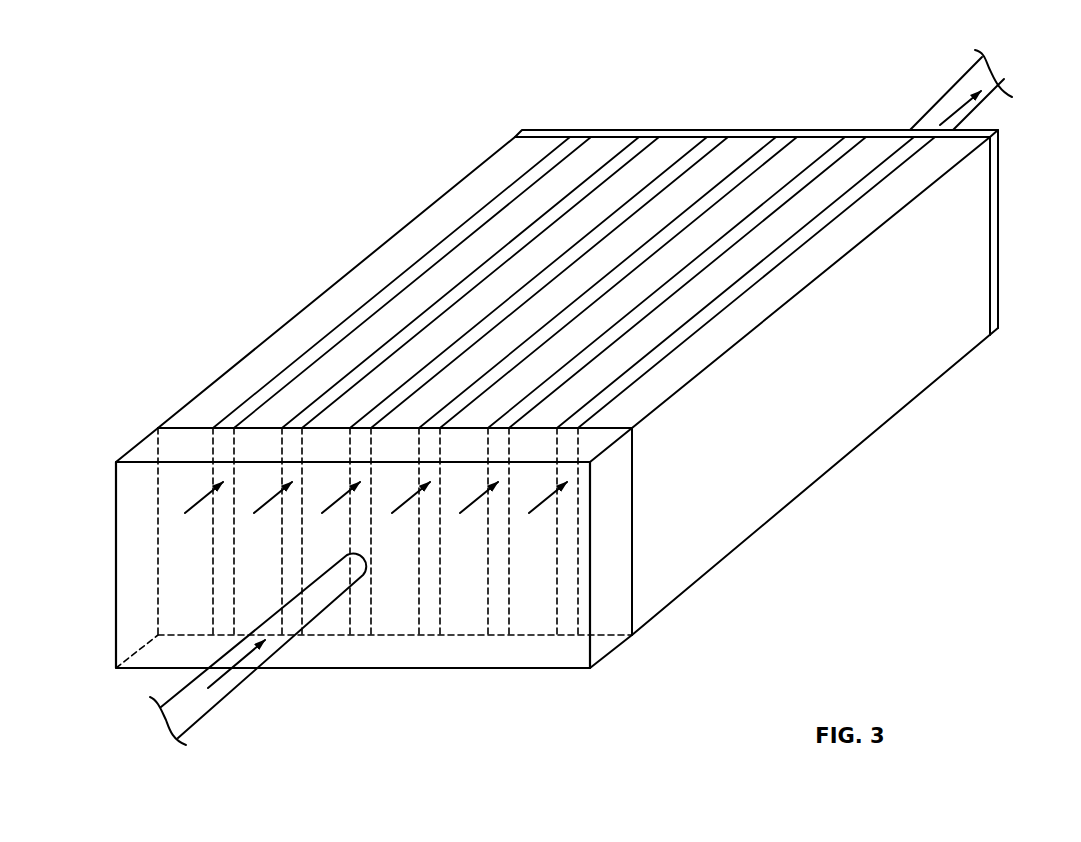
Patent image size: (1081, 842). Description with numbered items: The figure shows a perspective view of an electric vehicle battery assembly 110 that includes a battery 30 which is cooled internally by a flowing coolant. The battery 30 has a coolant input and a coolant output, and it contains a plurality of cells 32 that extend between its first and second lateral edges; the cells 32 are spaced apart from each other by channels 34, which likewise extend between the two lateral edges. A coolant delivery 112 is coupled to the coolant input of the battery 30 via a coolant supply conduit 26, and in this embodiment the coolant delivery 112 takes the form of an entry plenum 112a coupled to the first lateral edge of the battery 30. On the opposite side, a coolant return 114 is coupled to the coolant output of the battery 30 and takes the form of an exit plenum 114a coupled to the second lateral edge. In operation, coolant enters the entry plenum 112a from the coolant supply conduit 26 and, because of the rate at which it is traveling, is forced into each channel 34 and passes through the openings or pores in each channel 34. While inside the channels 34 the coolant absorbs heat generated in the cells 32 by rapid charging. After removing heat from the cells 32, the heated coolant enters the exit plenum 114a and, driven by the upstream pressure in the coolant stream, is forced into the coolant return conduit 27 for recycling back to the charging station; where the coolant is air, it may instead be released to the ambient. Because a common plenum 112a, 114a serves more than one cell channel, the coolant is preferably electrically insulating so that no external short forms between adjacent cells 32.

The electric vehicle battery assembly 110 is at (285, 124).
The battery 30 is at (780, 495).
The cells 32 is at (495, 166).
The channels 34 is at (357, 322).
The coolant delivery 112 is at (392, 655).
The entry plenum 112a is at (605, 650).
The coolant return 114 is at (1001, 330).
The exit plenum 114a is at (993, 285).
The coolant supply conduit 26 is at (200, 690).
The coolant return conduit 27 is at (950, 101).